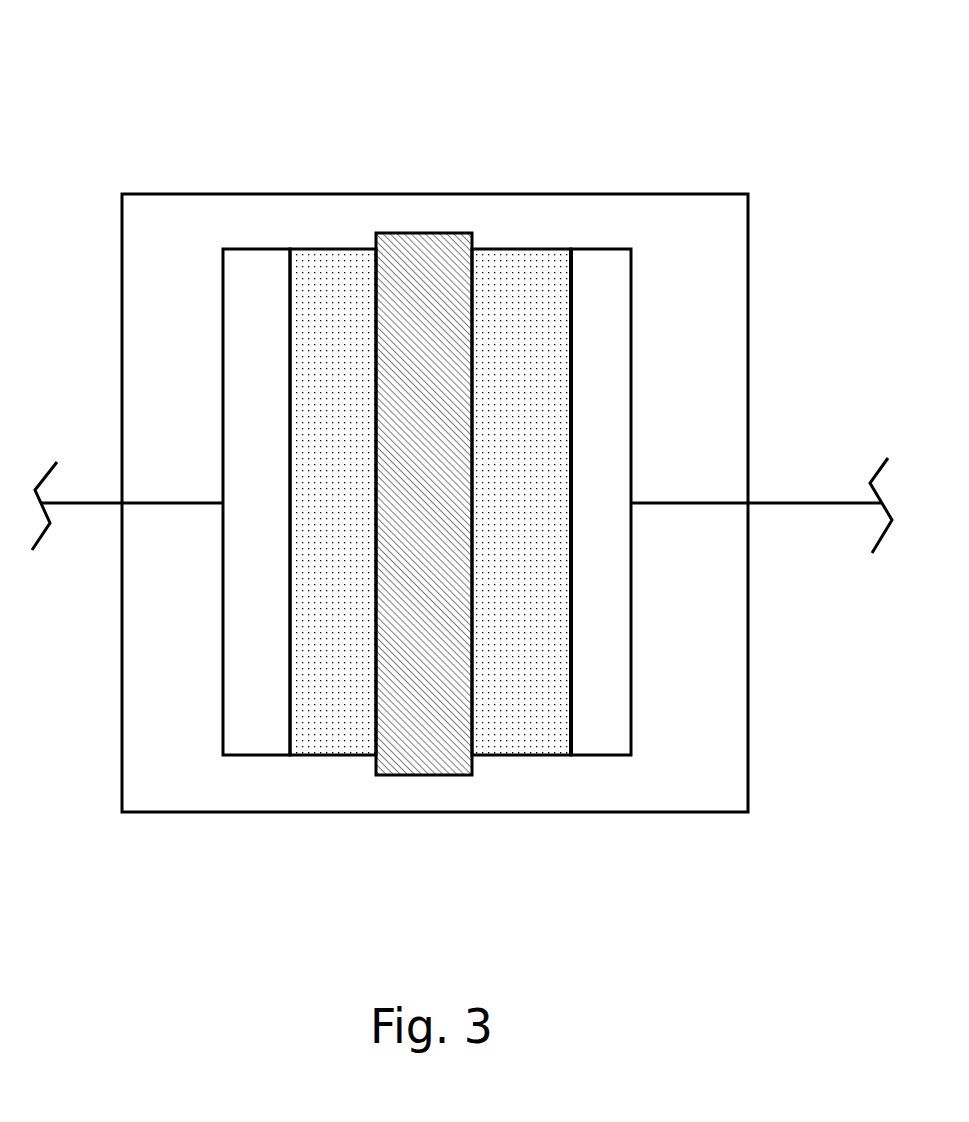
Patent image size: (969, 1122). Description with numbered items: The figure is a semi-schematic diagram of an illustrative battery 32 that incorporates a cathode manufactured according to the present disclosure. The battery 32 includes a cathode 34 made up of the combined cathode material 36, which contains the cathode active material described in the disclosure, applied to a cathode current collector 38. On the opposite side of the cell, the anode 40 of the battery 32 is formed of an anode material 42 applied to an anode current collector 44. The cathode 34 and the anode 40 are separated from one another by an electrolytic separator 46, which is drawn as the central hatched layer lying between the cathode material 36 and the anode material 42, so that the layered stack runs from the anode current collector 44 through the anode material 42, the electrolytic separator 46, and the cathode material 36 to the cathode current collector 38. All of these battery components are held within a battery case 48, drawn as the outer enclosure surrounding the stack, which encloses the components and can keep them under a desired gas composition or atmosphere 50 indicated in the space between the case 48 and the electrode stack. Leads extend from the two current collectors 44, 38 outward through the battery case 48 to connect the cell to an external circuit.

The battery 32 is at (230, 58).
The cathode 34 is at (566, 466).
The combined cathode material 36 is at (520, 757).
The cathode current collector 38 is at (609, 757).
The anode 40 is at (287, 467).
The anode material 42 is at (328, 757).
The anode current collector 44 is at (253, 757).
The electrolytic separator 46 is at (428, 233).
The battery case 48 is at (190, 192).
The gas composition or atmosphere 50 is at (160, 322).